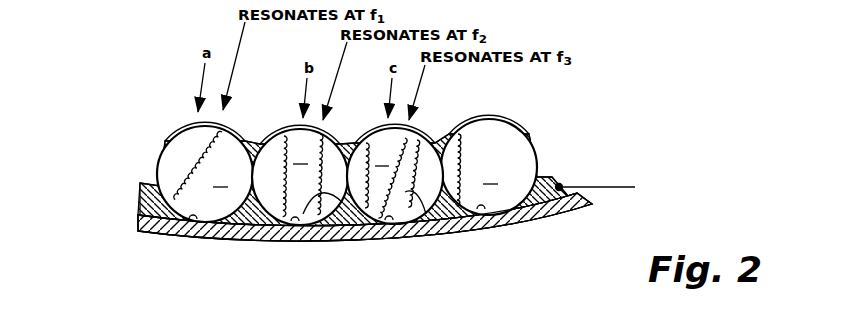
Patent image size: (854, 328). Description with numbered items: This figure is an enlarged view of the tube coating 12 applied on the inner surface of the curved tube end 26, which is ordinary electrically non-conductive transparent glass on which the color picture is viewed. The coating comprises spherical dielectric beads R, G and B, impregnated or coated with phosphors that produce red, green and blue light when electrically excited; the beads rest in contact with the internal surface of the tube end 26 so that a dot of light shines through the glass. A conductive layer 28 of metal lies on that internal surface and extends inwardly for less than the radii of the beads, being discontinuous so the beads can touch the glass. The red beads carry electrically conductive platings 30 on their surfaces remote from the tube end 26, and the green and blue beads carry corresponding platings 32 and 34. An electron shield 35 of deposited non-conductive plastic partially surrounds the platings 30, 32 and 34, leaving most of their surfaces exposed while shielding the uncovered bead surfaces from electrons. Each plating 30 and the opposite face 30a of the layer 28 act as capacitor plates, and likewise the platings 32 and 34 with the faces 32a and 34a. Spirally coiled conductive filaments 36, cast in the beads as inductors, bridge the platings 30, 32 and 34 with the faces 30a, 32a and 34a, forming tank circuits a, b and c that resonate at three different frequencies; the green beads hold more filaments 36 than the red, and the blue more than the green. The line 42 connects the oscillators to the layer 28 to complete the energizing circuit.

The tube coating 12 is at (540, 139).
The tube end 26 is at (535, 223).
The conductive layer 28 is at (143, 183).
The plating 30 is at (183, 122).
The plating 32 is at (287, 128).
The plating 34 is at (375, 128).
The electron shield 35 is at (433, 133).
The filaments 36 is at (187, 172).
The face 30a is at (195, 215).
The face 32a is at (295, 218).
The face 34a is at (389, 220).
The line 42 is at (620, 188).